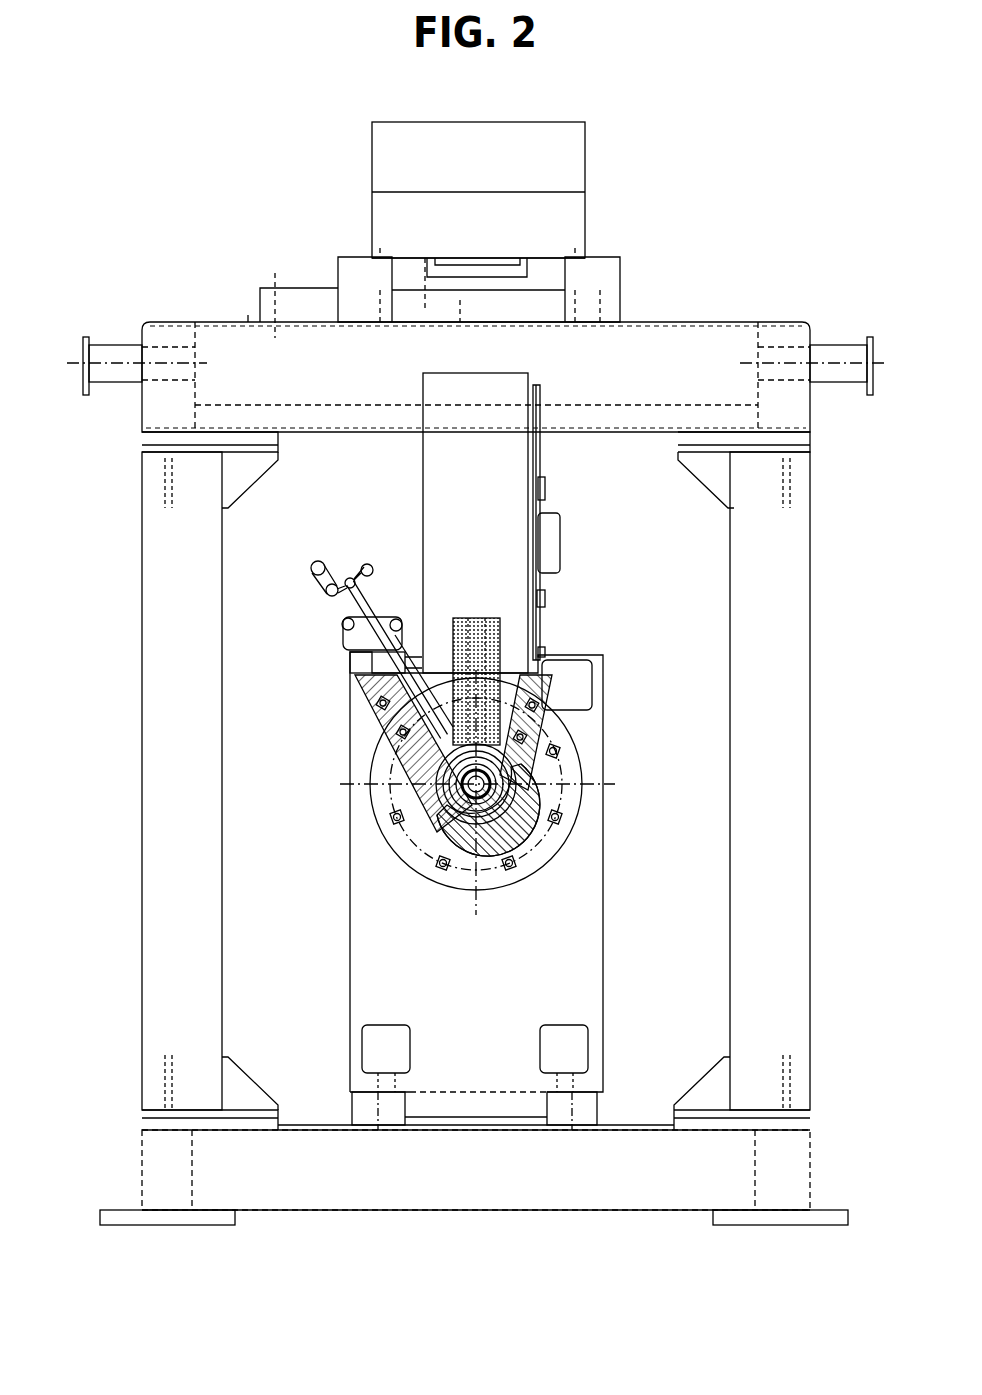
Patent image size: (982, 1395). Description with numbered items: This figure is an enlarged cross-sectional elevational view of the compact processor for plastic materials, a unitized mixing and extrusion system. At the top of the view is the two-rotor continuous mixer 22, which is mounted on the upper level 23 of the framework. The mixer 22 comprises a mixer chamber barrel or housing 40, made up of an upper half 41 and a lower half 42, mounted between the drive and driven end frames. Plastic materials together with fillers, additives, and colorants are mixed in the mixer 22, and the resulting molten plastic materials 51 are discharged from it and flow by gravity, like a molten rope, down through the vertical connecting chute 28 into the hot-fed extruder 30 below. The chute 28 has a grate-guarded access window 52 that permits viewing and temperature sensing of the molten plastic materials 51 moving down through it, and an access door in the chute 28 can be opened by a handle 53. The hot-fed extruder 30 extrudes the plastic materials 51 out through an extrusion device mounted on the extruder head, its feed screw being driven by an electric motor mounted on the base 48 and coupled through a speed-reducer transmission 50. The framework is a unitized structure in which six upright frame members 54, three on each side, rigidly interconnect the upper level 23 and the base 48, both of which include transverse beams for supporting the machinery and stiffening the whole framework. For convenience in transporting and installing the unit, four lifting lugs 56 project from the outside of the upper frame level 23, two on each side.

The two-rotor continuous mixer 22 is at (655, 123).
The upper level 23 is at (655, 389).
The vertical chute 28 is at (409, 487).
The hot-fed extruder 30 is at (543, 773).
The mixer chamber barrel 40 is at (428, 160).
The upper half 41 is at (402, 157).
The lower half 42 is at (390, 217).
The base 48 is at (487, 1189).
The speed-reducer transmission 50 is at (613, 895).
The molten plastic materials 51 is at (475, 568).
The grate-guarded access window 52 is at (546, 596).
The handle 53 is at (563, 548).
The upright frame members 54 is at (170, 705).
The lifting lugs 56 is at (112, 347).